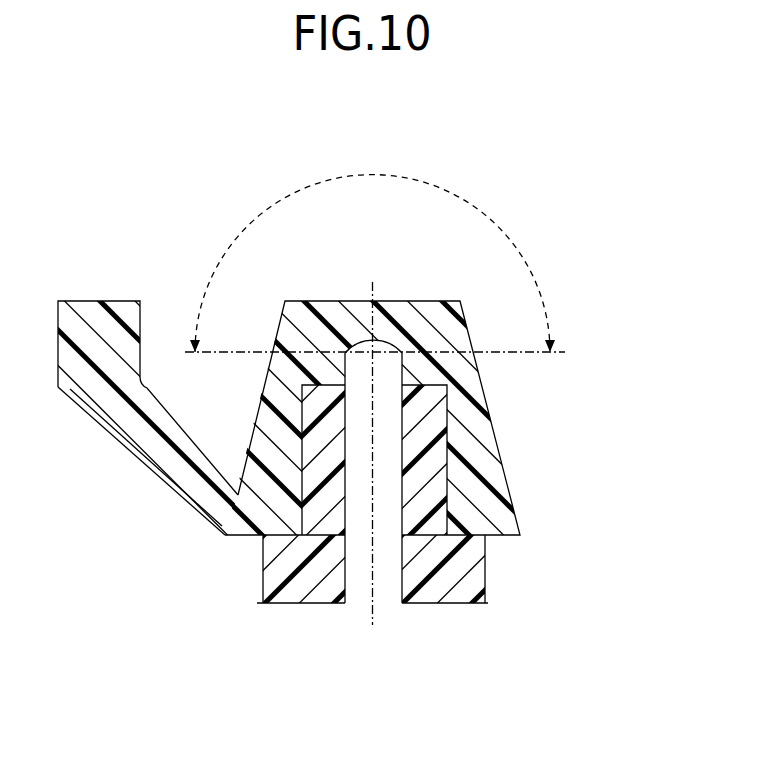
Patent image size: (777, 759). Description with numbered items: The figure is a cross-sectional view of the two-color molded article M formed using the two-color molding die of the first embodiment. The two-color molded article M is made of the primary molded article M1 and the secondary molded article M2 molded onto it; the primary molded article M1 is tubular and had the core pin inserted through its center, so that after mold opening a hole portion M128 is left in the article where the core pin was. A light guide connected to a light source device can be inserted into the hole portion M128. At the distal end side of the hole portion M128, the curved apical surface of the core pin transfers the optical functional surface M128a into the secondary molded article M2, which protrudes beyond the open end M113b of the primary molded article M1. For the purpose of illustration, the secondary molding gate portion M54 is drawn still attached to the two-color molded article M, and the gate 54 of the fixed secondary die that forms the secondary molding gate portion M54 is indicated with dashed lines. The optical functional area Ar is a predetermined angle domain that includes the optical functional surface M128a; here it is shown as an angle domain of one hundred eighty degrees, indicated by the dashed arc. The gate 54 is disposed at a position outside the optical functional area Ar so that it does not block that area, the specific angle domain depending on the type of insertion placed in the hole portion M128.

The optical functional area Ar is at (268, 210).
The two-color molded article M is at (448, 379).
The primary molded article M1 is at (625, 437).
The secondary molded article M2 is at (512, 453).
The open end M113b is at (330, 376).
The hole portion M128 is at (401, 566).
The optical functional surface M128a is at (394, 347).
The secondary molding gate portion M54 is at (146, 434).
The gate 54 is at (95, 421).